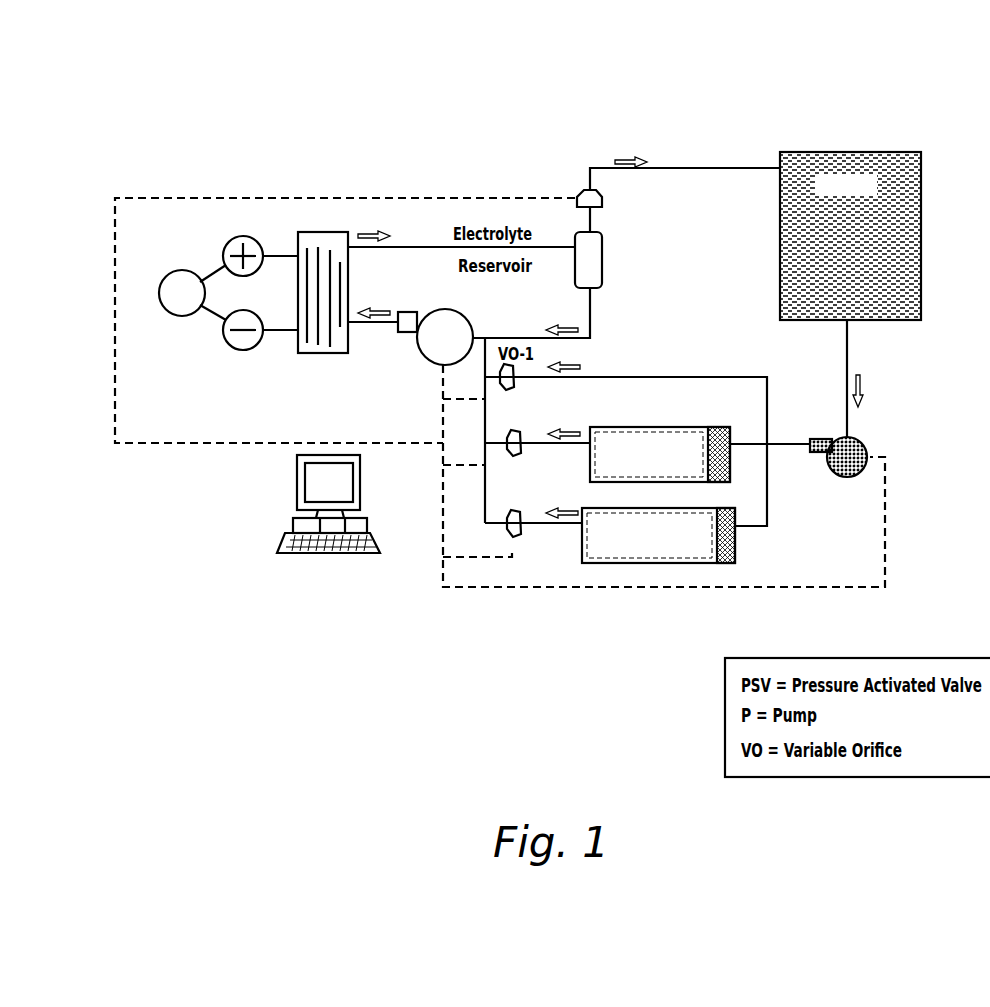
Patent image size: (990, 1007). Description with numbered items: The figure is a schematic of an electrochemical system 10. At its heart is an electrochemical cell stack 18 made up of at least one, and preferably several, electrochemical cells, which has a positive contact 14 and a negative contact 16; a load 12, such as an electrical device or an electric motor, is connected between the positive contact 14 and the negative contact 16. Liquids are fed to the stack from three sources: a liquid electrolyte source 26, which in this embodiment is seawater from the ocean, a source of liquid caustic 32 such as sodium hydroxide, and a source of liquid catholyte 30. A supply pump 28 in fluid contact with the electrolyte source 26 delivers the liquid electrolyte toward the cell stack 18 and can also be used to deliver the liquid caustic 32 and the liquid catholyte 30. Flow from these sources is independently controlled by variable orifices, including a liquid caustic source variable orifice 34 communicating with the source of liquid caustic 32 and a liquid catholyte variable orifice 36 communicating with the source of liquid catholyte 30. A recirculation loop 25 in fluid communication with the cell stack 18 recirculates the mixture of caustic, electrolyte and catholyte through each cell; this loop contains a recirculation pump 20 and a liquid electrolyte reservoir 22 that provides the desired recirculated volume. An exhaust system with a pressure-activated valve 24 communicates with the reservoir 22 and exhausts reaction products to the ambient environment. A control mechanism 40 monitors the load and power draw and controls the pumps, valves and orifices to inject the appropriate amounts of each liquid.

The electrochemical system 10 is at (238, 112).
The load 12 is at (182, 270).
The positive contact 14 is at (243, 236).
The negative contact 16 is at (243, 350).
The electrochemical cell stack 18 is at (348, 345).
The recirculation pump 20 is at (413, 312).
The liquid electrolyte reservoir 22 is at (602, 260).
The pressure-activated valve 24 is at (581, 190).
The recirculation loop 25 is at (590, 313).
The liquid electrolyte source 26 is at (921, 215).
The supply pump 28 is at (865, 437).
The source of liquid catholyte 30 is at (670, 425).
The source of liquid caustic 32 is at (690, 563).
The liquid caustic source variable orifice 34 is at (522, 527).
The liquid catholyte variable orifice 36 is at (522, 447).
The control mechanism 40 is at (322, 553).